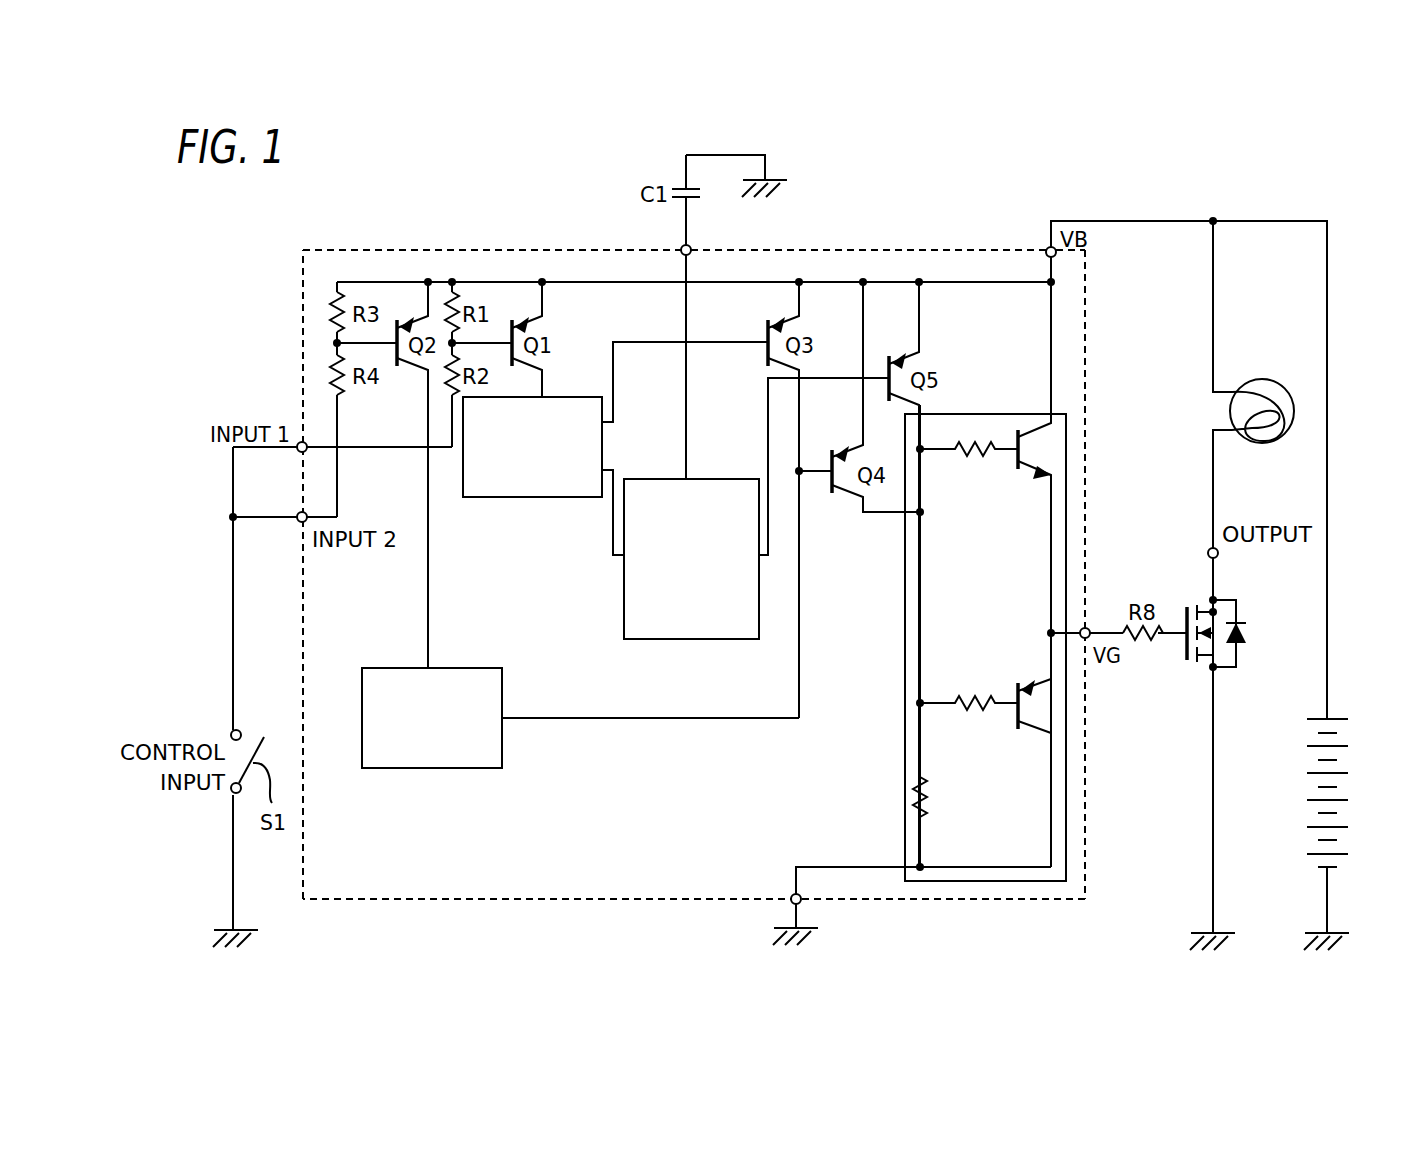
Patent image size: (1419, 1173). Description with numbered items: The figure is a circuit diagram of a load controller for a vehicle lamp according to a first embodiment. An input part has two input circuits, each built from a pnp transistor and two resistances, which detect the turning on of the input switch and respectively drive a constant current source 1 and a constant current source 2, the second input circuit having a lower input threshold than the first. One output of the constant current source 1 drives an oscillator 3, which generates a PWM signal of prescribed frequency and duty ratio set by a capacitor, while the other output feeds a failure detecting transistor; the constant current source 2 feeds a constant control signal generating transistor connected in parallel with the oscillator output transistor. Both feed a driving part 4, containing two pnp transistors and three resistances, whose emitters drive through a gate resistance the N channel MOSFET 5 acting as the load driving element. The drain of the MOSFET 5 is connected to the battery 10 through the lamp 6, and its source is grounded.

The constant current source 1 is at (543, 497).
The constant current source 2 is at (463, 668).
The oscillator 3 is at (710, 479).
The driving part 4 is at (905, 610).
The N channel MOSFET 5 is at (1236, 600).
The lamp 6 is at (1268, 379).
The battery 10 is at (1350, 790).